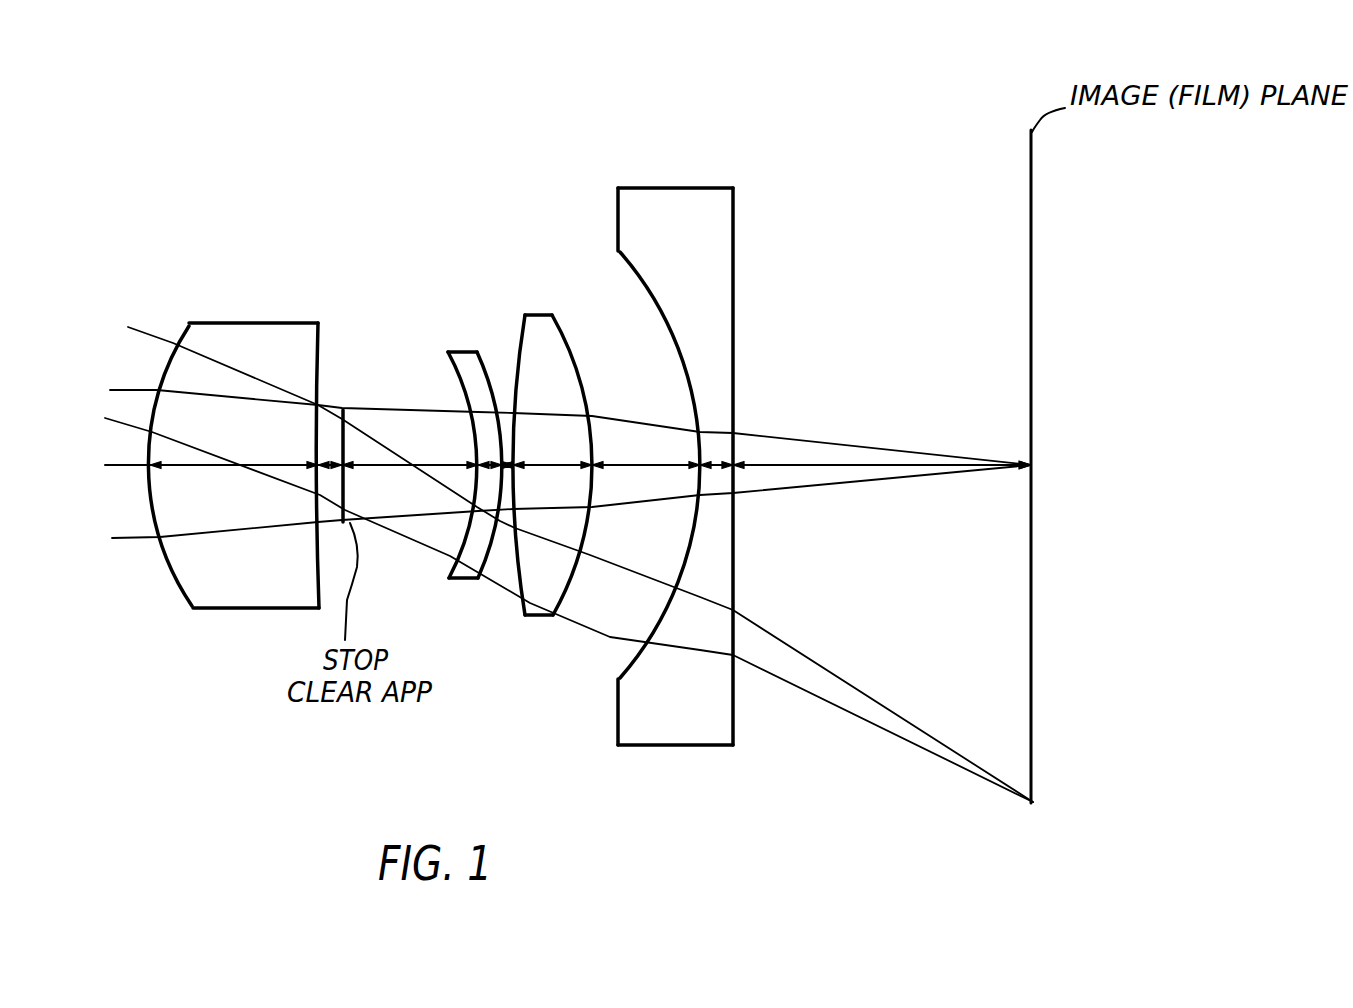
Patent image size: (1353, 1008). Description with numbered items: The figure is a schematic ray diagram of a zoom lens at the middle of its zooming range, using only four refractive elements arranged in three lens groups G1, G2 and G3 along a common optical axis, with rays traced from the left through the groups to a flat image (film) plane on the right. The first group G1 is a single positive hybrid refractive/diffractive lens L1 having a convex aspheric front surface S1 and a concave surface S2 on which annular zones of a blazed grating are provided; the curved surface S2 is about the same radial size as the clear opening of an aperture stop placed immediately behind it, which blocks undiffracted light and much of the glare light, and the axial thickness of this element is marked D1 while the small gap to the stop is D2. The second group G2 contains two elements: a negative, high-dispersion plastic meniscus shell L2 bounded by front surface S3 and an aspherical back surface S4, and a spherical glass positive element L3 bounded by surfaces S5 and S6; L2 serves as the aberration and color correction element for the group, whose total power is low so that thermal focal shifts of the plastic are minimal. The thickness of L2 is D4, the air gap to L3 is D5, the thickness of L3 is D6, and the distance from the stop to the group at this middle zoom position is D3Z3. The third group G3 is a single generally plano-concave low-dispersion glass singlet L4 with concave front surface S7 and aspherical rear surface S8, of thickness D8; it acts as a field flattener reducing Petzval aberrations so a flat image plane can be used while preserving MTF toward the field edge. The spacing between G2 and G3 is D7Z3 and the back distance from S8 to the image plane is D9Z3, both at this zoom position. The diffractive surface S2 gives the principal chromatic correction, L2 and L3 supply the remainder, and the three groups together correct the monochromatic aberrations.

The first lens group G1 is at (253, 292).
The second lens group G2 is at (505, 299).
The third lens group G3 is at (690, 167).
The first lens element L1 is at (237, 609).
The negative plastic lens element L2 is at (456, 579).
The positive glass lens element L3 is at (533, 618).
The plano-concave field flattening lens element L4 is at (672, 747).
The convex front surface S1 is at (168, 571).
The concave diffractive surface S2 is at (318, 508).
The front surface of lens L2 S3 is at (465, 405).
The aspherical back surface of lens L2 S4 is at (483, 381).
The front surface of lens L3 S5 is at (519, 392).
The back surface of lens L3 S6 is at (577, 358).
The concave front surface of lens L4 S7 is at (640, 283).
The aspherical plano-concave back surface of lens L4 S8 is at (735, 335).
The axial thickness of lens L1 D1 is at (197, 466).
The spacing between surface S2 and aperture stop D2 is at (331, 458).
The spacing between aperture stop and second group at zoom position three D3Z3 is at (426, 462).
The axial thickness of lens L2 D4 is at (492, 474).
The spacing between lenses L2 and L3 D5 is at (510, 432).
The axial thickness of lens L3 D6 is at (553, 462).
The spacing between second and third groups at zoom position three D7Z3 is at (628, 460).
The axial thickness of lens L4 D8 is at (713, 460).
The back focal distance to image plane at zoom position three D9Z3 is at (856, 462).